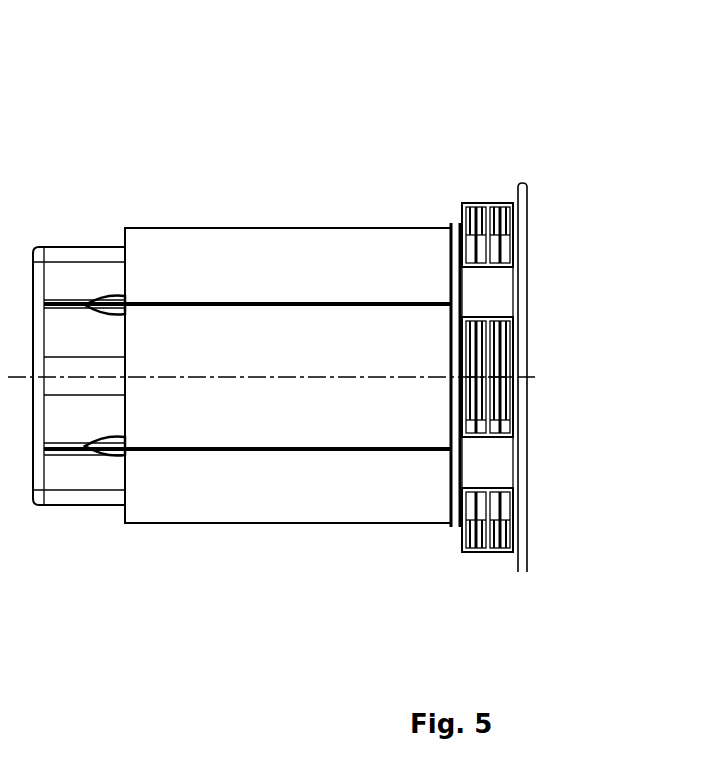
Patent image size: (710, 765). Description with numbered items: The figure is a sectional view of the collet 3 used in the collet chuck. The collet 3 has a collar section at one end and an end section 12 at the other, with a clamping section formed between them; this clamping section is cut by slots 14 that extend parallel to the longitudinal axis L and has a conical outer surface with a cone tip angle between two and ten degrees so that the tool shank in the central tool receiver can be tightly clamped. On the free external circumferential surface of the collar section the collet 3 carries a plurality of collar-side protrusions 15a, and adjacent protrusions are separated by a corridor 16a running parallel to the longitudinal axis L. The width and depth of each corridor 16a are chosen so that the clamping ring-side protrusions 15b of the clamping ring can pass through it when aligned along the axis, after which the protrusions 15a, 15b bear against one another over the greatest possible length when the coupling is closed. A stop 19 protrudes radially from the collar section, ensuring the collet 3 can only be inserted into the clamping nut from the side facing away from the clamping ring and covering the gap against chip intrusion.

The collet 3 is at (275, 253).
The end section 12 is at (68, 510).
The slots 14 is at (175, 300).
The collar-side protrusions 15a is at (498, 203).
The clamping ring-side protrusions 15b is at (0, 413).
The corridor 16a is at (488, 292).
The stop 19 is at (527, 565).
The longitudinal axis L is at (526, 377).